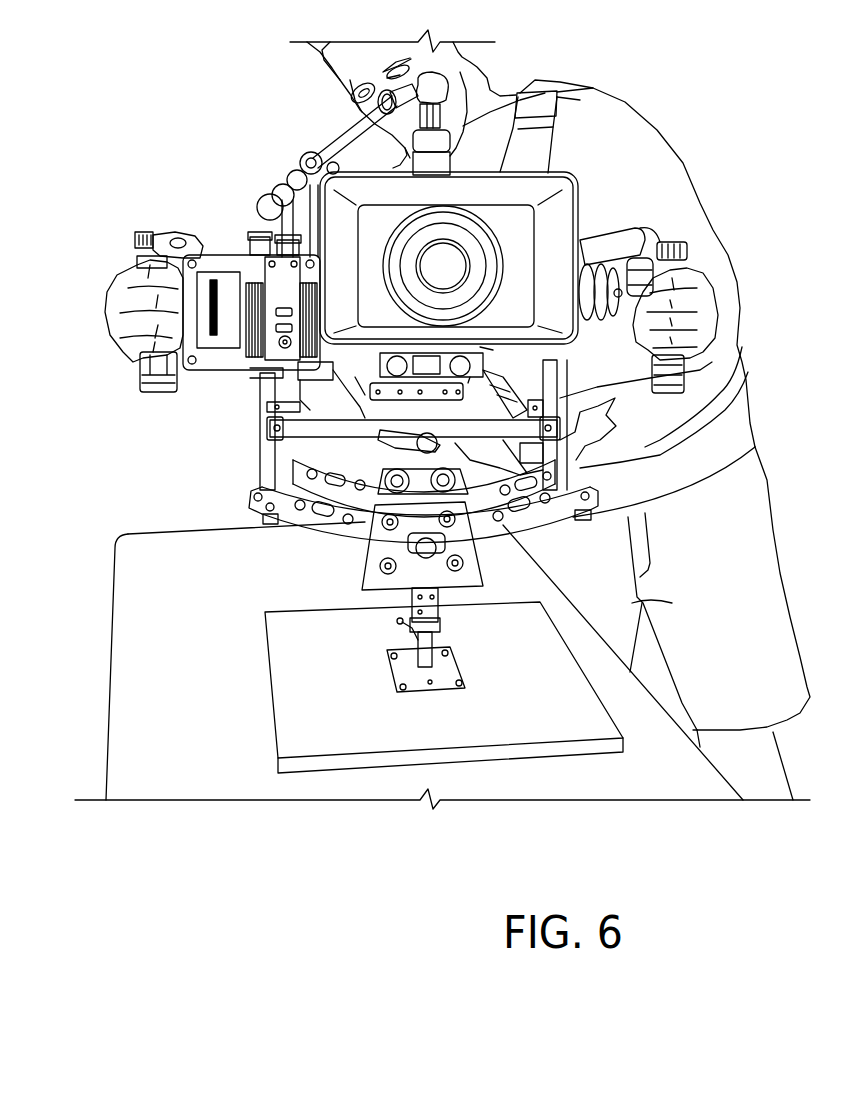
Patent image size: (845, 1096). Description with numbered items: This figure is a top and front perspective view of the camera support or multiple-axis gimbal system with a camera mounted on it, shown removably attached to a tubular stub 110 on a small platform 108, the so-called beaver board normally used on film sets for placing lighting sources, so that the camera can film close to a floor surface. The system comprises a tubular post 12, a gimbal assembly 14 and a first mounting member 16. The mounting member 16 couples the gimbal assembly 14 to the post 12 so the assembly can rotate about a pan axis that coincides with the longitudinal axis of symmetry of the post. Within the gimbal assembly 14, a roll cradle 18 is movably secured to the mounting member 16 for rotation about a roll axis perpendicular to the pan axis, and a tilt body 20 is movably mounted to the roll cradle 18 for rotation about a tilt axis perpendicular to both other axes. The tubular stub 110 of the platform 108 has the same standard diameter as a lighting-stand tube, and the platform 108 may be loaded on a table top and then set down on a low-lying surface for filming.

The tubular post 12 is at (443, 599).
The gimbal assembly 14 is at (244, 542).
The first mounting member 16 is at (362, 565).
The roll cradle 18 is at (300, 536).
The tilt body 20 is at (248, 445).
The platform 108 is at (268, 720).
The tubular stub 110 is at (422, 656).